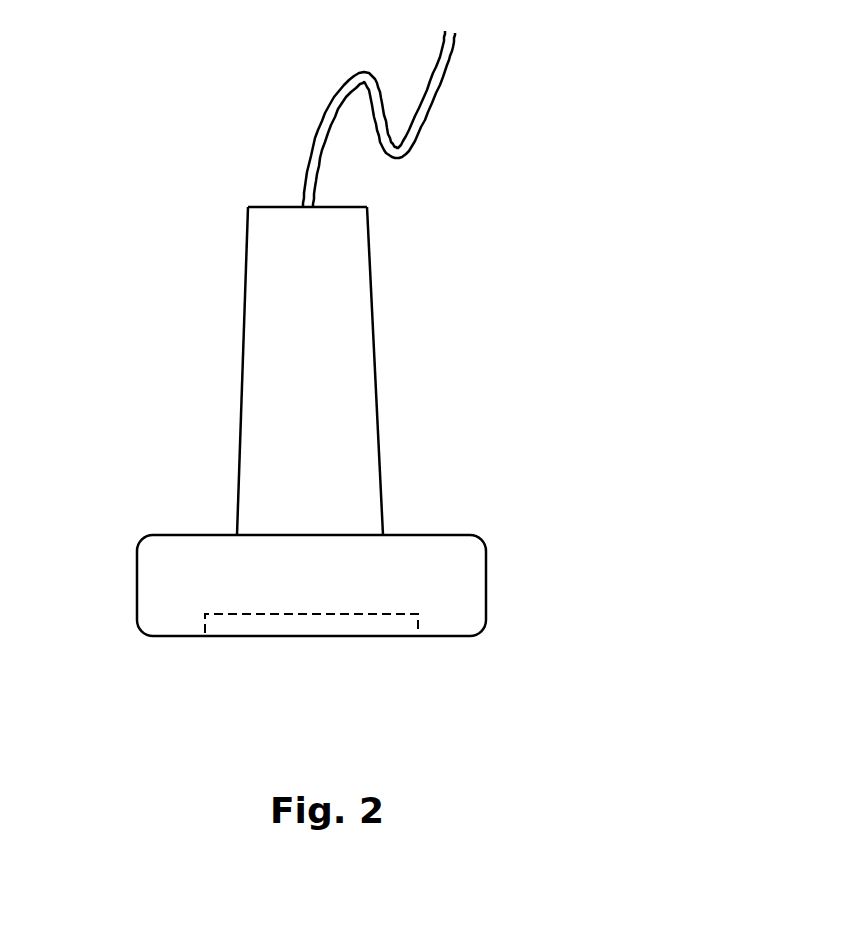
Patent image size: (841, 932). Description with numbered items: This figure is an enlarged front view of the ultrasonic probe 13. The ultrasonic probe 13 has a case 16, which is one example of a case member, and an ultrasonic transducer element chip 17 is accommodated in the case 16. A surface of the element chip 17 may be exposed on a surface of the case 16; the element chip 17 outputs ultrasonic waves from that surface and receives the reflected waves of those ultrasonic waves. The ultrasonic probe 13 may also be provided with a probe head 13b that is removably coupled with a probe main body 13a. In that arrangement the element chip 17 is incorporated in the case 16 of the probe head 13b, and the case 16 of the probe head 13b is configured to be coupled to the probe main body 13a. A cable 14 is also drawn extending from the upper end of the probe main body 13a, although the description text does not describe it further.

The ultrasonic probe 13 is at (282, 367).
The probe main body 13a is at (243, 362).
The probe head 13b is at (137, 587).
The cable 14 is at (452, 73).
The case 16 is at (375, 355).
The ultrasonic transducer element chip 17 is at (313, 627).